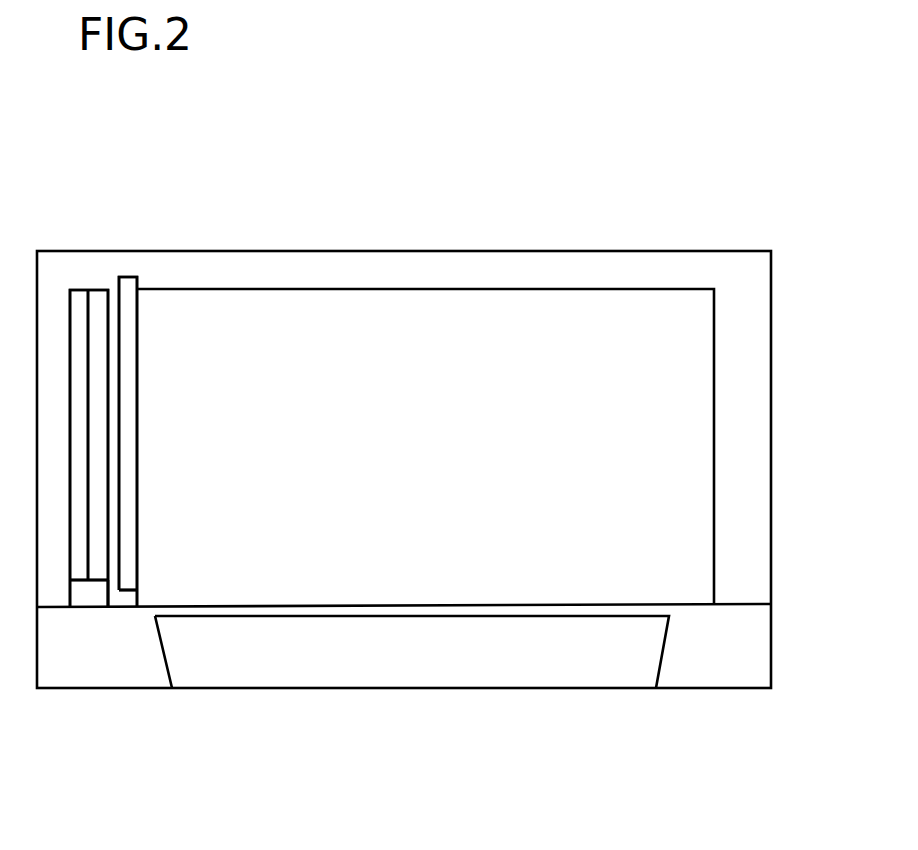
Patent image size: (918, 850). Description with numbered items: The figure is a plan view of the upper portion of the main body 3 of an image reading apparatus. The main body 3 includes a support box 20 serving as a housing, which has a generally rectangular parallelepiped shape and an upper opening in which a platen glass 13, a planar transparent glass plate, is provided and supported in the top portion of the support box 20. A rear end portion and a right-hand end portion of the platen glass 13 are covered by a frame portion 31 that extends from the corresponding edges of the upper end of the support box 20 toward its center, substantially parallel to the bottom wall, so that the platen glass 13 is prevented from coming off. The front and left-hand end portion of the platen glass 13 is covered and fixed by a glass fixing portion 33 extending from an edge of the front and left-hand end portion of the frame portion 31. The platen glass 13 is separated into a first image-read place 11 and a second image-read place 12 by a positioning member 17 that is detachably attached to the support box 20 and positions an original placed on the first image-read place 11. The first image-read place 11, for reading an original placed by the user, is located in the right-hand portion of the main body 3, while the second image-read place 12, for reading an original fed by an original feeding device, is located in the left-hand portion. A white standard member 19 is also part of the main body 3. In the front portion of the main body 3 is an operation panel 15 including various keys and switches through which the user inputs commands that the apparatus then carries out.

The main body 3 is at (758, 207).
The support box 20 is at (552, 248).
The frame portion 31 is at (690, 263).
The platen glass 13 is at (205, 226).
The second image-read place 12 is at (95, 300).
The first image-read place 11 is at (145, 303).
The operation panel 15 is at (413, 675).
The glass fixing portion 33 is at (87, 592).
The white standard member 19 is at (116, 580).
The positioning member 17 is at (128, 585).